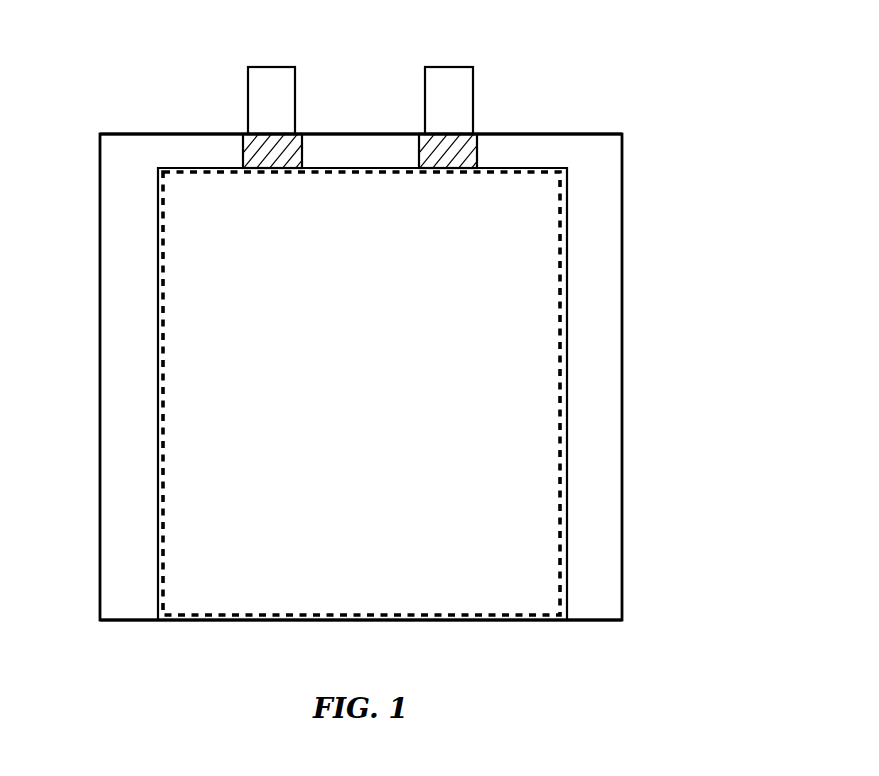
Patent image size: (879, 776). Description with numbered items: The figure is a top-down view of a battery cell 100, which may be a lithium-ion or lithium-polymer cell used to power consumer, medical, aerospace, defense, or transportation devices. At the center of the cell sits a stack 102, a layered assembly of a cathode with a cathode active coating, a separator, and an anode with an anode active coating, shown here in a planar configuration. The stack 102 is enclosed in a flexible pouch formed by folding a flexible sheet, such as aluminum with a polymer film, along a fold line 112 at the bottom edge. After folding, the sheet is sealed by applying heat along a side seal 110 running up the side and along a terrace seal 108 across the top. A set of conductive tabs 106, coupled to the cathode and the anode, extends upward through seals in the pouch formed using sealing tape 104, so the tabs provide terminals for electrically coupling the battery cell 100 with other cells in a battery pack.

The battery cell 100 is at (100, 128).
The stack 102 is at (362, 394).
The sealing tape 104 is at (440, 172).
The conductive tabs 106 is at (433, 67).
The terrace seal 108 is at (510, 133).
The side seal 110 is at (100, 370).
The fold line 112 is at (433, 620).